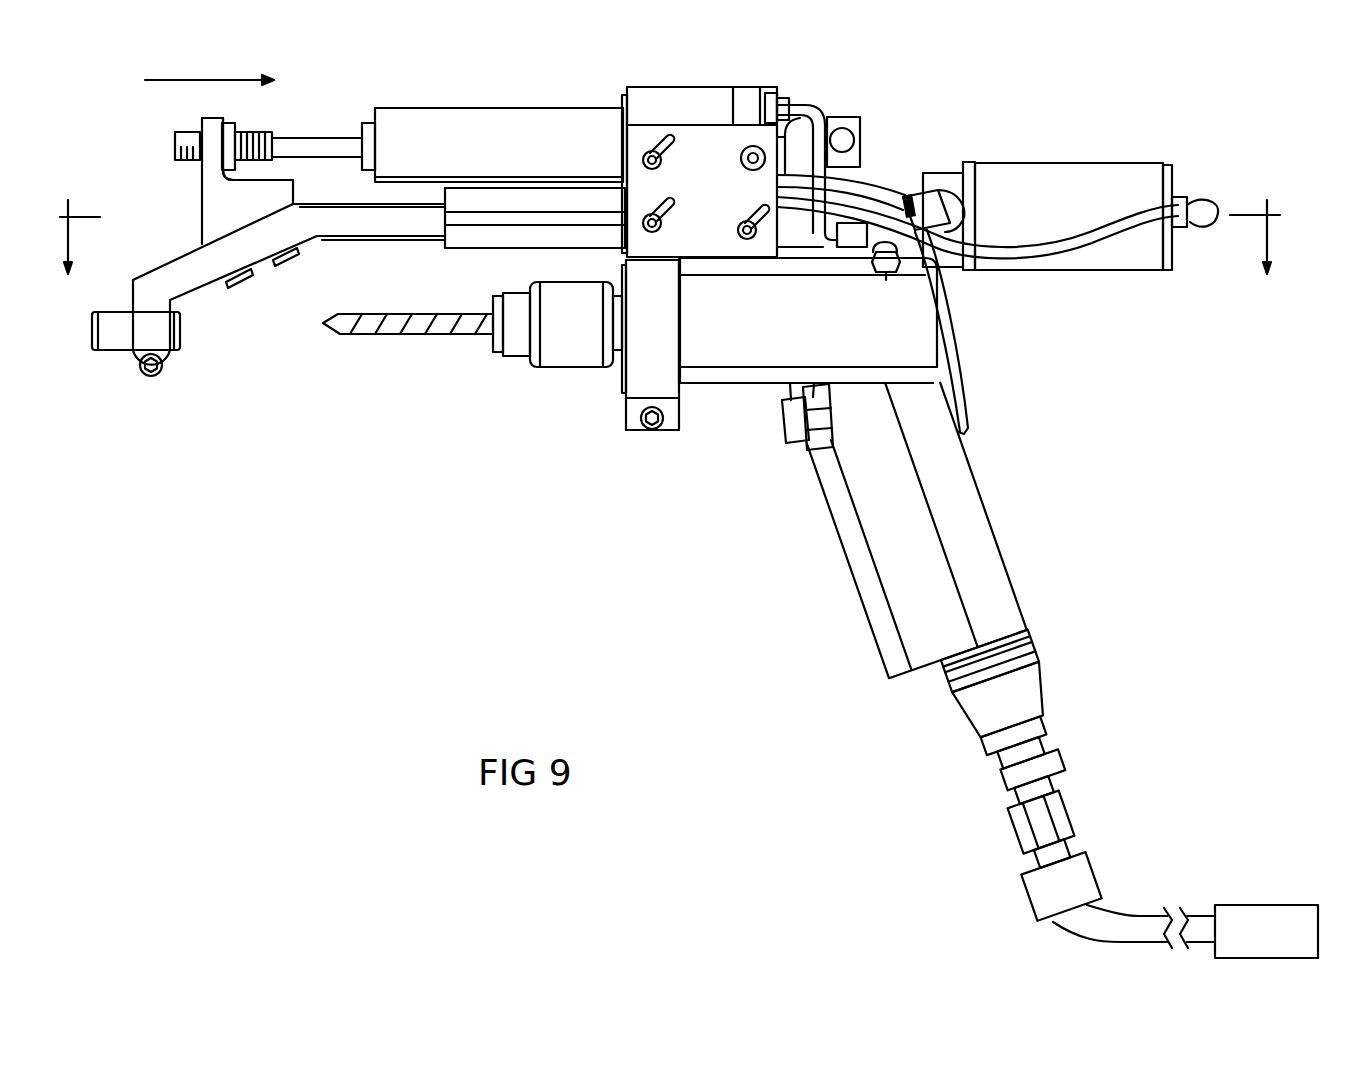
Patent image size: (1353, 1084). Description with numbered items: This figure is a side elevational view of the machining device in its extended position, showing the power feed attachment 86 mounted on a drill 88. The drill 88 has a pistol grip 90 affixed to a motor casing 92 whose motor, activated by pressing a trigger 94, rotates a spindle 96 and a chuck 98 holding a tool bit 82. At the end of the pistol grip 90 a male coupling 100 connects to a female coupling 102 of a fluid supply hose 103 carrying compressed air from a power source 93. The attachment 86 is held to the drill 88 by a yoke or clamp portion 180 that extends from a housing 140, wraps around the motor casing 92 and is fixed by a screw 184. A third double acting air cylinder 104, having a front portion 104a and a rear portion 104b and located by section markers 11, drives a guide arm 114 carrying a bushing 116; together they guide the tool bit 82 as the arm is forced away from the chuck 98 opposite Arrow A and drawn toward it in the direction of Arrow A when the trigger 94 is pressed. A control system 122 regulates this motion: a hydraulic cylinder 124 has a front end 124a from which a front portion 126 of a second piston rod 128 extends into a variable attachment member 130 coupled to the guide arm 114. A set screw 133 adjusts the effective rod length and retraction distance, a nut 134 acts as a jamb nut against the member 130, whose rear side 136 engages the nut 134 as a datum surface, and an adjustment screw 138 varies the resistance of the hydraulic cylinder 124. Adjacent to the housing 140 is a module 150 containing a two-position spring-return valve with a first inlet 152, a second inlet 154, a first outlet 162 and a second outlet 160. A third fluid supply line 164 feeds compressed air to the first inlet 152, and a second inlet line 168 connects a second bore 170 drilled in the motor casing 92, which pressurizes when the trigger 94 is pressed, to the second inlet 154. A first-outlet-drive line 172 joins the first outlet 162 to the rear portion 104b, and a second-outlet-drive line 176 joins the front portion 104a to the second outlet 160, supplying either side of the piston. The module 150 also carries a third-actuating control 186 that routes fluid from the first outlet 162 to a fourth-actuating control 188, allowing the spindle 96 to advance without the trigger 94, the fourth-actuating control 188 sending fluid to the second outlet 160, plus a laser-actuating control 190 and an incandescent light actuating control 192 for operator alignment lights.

The direction arrow A is at (147, 82).
The section line 11- 11 is at (667, 259).
The tool bit 82 is at (417, 327).
The power feed attachment 86 is at (538, 93).
The drill 88 is at (692, 562).
The pistol grip 90 is at (1005, 580).
The motor casing 92 is at (897, 353).
The power source 93 is at (1263, 905).
The trigger 94 is at (800, 442).
The spindle 96 is at (613, 337).
The chuck 98 is at (533, 327).
The male coupling 100 is at (1007, 833).
The female coupling 102 is at (1095, 865).
The fluid supply hose 103 is at (1137, 923).
The third double acting air cylinder 104 is at (1067, 167).
The front portion of third double acting air cylinder 104a is at (987, 180).
The rear portion of third double acting air cylinder 104b is at (1173, 173).
The guide arm 114 is at (200, 275).
The bushing 116 is at (110, 347).
The control system 122 is at (636, 80).
The hydraulic cylinder 124 is at (443, 110).
The front end of hydraulic cylinder 124a is at (368, 130).
The front portion of second piston rod 126 is at (268, 170).
The second piston rod 128 is at (323, 137).
The variable attachment member 130 is at (200, 130).
The set screw 133 is at (260, 133).
The nut 134 is at (232, 122).
The rear side of variable attachment member 136 is at (217, 112).
The adjustment screw 138 is at (863, 127).
The housing 140 is at (493, 230).
The module 150 is at (712, 187).
The first inlet 152 is at (750, 152).
The second inlet 154 is at (780, 103).
The second outlet 160 is at (705, 262).
The first outlet 162 is at (827, 123).
The third fluid supply line 164 is at (967, 430).
The second inlet line 168 is at (848, 117).
The second bore 170 is at (890, 283).
The first-outlet-drive line 172 is at (1170, 190).
The second-outlet-drive line 176 is at (873, 170).
The yoke or clamp portion 180 is at (682, 413).
The screw 184 is at (653, 433).
The third-actuating control 186 is at (745, 235).
The fourth-actuating control 188 is at (750, 110).
The laser-actuating control 190 is at (664, 153).
The incandescent light actuating control 192 is at (670, 220).